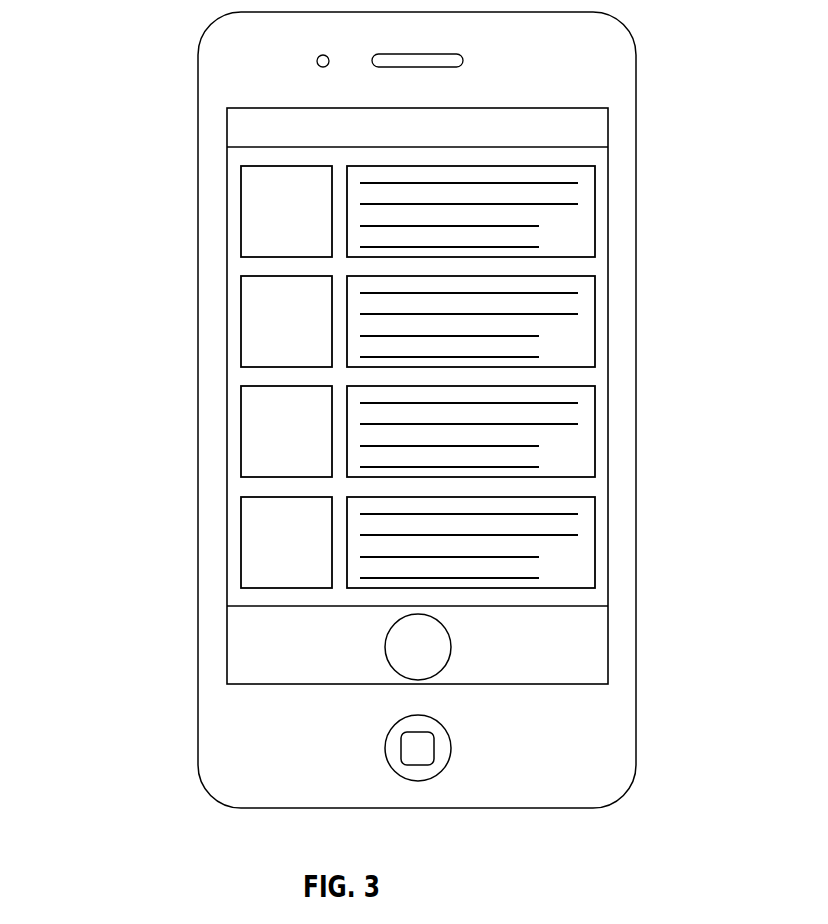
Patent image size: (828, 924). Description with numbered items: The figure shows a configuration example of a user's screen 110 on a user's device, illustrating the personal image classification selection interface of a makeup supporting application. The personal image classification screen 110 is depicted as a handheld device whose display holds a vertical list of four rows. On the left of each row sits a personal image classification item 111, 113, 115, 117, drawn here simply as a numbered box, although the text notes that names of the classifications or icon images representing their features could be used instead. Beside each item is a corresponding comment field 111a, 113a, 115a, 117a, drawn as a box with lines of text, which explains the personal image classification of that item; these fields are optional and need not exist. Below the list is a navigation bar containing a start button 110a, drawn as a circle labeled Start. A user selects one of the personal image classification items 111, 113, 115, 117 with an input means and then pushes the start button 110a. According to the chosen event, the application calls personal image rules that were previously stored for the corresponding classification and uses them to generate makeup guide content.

The personal image classification screen 110 is at (134, 383).
The start button 110a is at (437, 662).
The personal image classification item 111 is at (255, 219).
The comment field 111a is at (585, 226).
The personal image classification item 113 is at (255, 329).
The comment field 113a is at (585, 336).
The personal image classification item 115 is at (255, 439).
The comment field 115a is at (585, 446).
The personal image classification item 117 is at (255, 549).
The comment field 117a is at (585, 556).